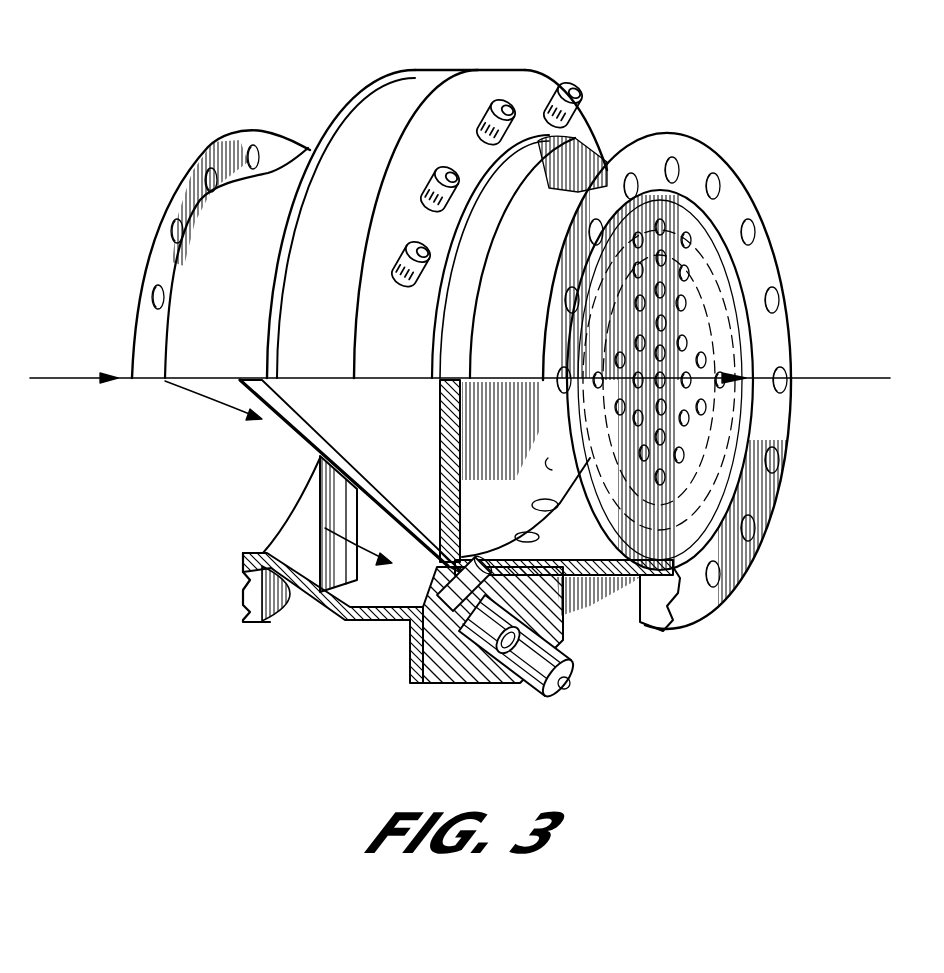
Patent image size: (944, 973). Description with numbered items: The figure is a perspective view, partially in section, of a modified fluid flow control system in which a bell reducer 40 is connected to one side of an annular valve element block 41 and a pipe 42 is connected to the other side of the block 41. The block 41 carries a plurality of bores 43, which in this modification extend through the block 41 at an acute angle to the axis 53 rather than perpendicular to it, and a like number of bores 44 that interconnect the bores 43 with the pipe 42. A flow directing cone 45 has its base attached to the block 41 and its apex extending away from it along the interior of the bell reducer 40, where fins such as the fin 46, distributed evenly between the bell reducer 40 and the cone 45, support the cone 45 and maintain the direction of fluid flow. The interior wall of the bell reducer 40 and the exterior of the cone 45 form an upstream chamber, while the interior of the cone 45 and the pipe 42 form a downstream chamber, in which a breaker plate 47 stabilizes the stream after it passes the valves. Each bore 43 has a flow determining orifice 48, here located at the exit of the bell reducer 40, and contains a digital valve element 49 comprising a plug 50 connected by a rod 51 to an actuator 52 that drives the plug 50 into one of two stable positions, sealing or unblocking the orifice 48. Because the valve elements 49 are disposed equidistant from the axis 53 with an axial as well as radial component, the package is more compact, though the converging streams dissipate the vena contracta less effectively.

The bell reducer 40 is at (310, 150).
The annular valve element block 41 is at (440, 72).
The pipe 42 is at (650, 580).
The radial bores 43 is at (443, 635).
The axial bores 44 is at (535, 495).
The flow directing cone 45 is at (290, 425).
The fin 46 is at (332, 508).
The breaker plate 47 is at (722, 498).
The flow determining orifice 48 is at (448, 597).
The digital valve element 49 is at (560, 86).
The plug 50 is at (483, 677).
The rod 51 is at (550, 648).
The actuator 52 is at (545, 688).
The axis 53 is at (838, 378).